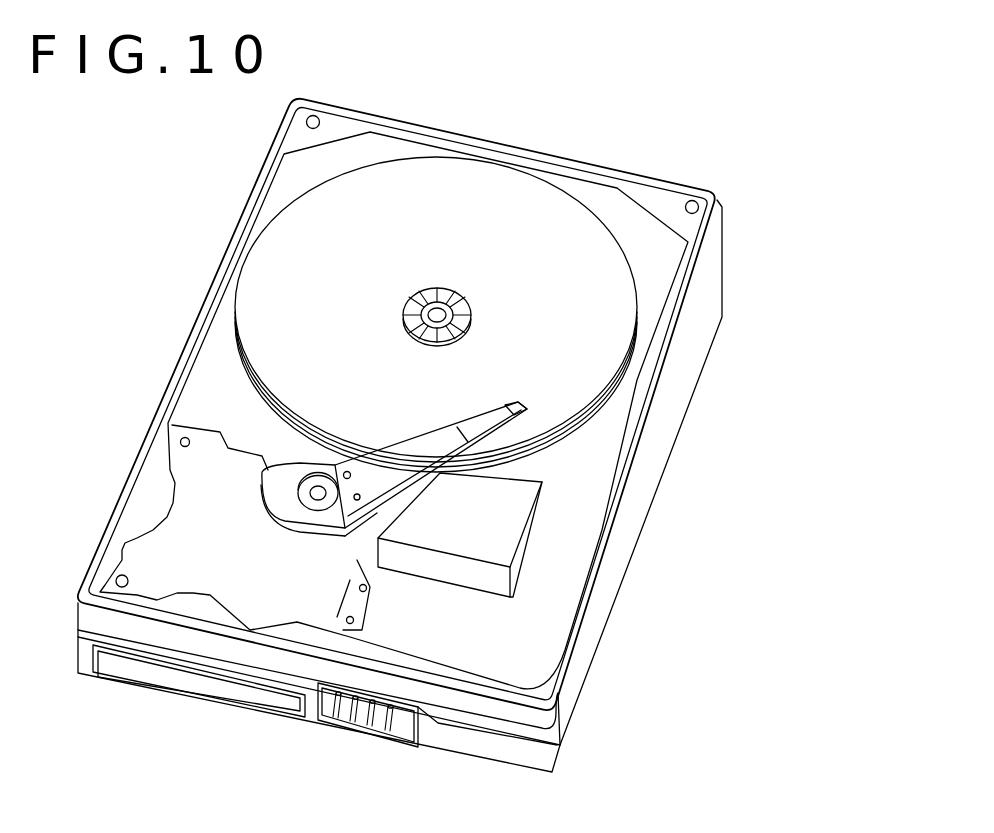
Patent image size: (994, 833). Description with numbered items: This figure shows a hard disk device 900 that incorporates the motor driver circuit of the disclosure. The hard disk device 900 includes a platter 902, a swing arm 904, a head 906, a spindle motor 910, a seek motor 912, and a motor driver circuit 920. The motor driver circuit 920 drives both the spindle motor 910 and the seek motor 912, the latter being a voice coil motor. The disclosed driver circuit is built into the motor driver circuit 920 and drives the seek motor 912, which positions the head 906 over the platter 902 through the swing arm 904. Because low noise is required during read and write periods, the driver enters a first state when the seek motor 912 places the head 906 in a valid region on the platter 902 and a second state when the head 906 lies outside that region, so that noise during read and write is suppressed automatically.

The hard disk device 900 is at (917, 89).
The platter 902 is at (503, 237).
The swing arm 904 is at (420, 463).
The head 906 is at (523, 403).
The spindle motor 910 is at (415, 290).
The seek motor 912 is at (263, 523).
The motor driver circuit 920 is at (493, 535).